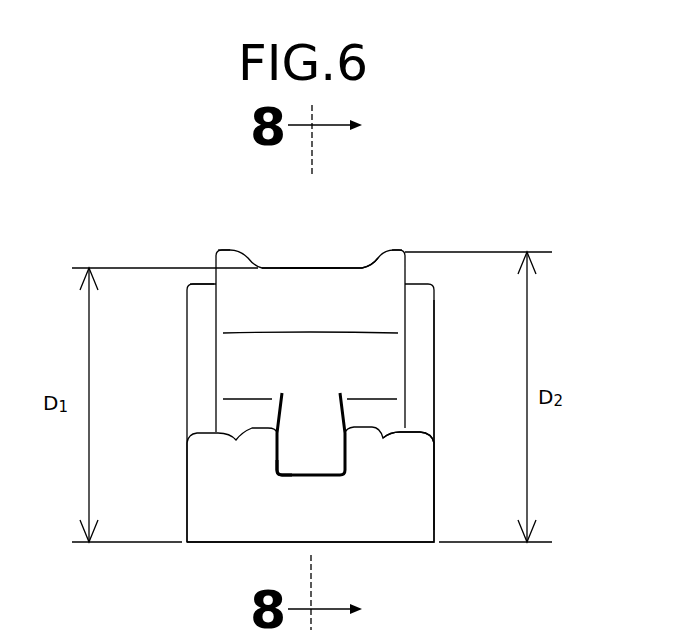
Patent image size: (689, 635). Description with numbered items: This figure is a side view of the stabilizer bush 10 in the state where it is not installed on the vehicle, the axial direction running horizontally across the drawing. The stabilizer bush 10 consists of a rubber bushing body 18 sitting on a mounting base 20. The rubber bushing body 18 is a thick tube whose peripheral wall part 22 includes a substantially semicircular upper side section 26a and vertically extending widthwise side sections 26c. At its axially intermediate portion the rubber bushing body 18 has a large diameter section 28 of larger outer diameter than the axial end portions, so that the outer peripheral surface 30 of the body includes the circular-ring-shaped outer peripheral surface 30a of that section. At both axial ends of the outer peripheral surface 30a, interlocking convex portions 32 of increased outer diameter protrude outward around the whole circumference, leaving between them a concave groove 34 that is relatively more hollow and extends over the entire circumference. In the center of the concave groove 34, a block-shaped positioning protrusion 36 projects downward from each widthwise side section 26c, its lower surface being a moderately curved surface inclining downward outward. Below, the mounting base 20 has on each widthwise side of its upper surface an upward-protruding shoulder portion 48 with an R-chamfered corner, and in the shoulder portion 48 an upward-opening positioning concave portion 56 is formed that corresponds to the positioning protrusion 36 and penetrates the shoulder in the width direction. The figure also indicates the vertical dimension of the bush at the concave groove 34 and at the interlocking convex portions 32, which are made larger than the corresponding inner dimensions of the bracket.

The stabilizer bush 10 is at (453, 215).
The rubber bushing body 18 is at (433, 266).
The mounting base 20 is at (186, 484).
The peripheral wall part 22 is at (436, 323).
The upper side section 26a is at (308, 282).
The widthwise side section 26c is at (258, 365).
The large diameter section 28 is at (214, 263).
The outer peripheral surface 30 is at (288, 290).
The outer peripheral surface of the large diameter section 30a is at (322, 215).
The interlocking convex portion 32 is at (230, 258).
The concave groove 34 is at (373, 265).
The positioning protrusion 36 is at (312, 455).
The shoulder portion 48 is at (422, 457).
The positioning concave portion 56 is at (274, 468).